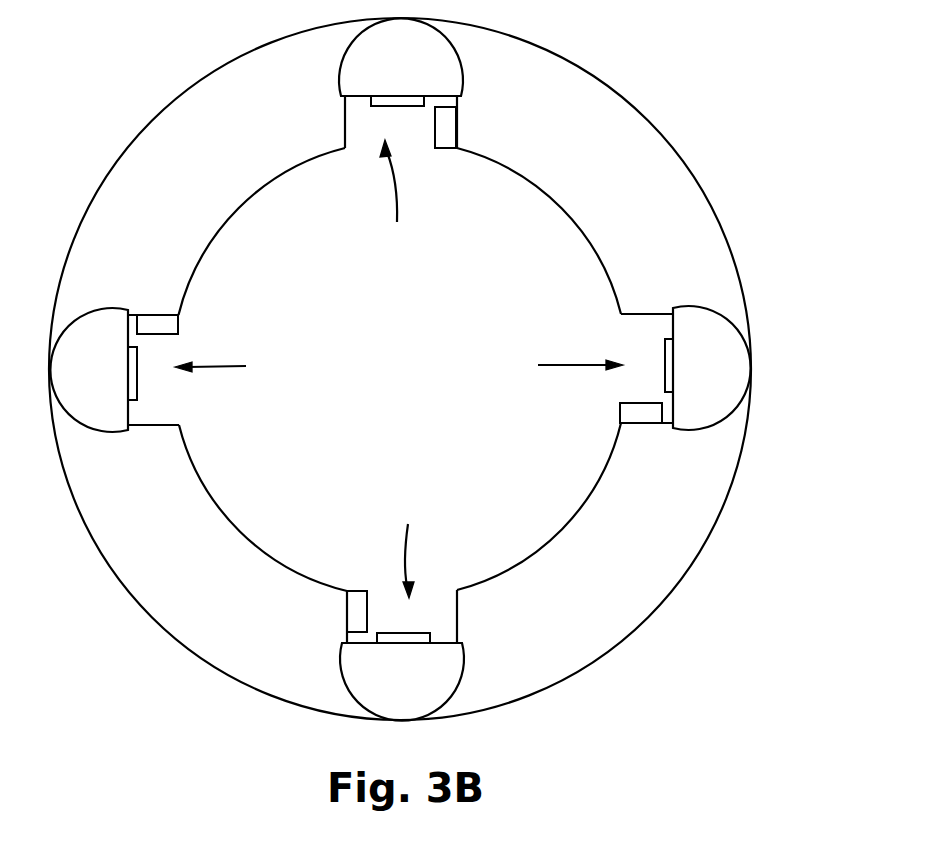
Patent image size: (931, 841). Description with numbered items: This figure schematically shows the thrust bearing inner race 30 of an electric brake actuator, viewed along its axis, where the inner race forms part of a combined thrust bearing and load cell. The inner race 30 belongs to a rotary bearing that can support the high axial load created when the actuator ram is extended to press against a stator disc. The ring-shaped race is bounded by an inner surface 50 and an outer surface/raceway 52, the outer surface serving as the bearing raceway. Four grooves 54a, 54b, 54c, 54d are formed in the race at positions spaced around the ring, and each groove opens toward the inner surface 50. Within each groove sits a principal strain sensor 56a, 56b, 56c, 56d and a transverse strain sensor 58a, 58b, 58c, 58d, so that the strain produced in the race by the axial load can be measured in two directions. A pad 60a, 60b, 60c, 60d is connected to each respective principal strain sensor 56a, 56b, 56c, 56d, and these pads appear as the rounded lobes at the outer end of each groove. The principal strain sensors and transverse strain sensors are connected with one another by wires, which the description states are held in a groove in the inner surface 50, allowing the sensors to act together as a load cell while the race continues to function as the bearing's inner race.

The thrust bearing inner race 30 is at (613, 135).
The inner surface 50 is at (561, 214).
The outer surface/raceway 52 is at (718, 217).
The groove 54a is at (397, 195).
The groove 54b is at (559, 366).
The groove 54c is at (413, 549).
The groove 54d is at (231, 366).
The principal strain sensor 56a is at (385, 107).
The principal strain sensor 56b is at (668, 363).
The principal strain sensor 56c is at (417, 637).
The principal strain sensor 56d is at (138, 378).
The transverse strain sensor 58a is at (445, 140).
The transverse strain sensor 58b is at (632, 416).
The transverse strain sensor 58c is at (356, 600).
The transverse strain sensor 58d is at (172, 324).
The pad 60a is at (401, 57).
The pad 60b is at (712, 368).
The pad 60c is at (402, 682).
The pad 60d is at (89, 370).